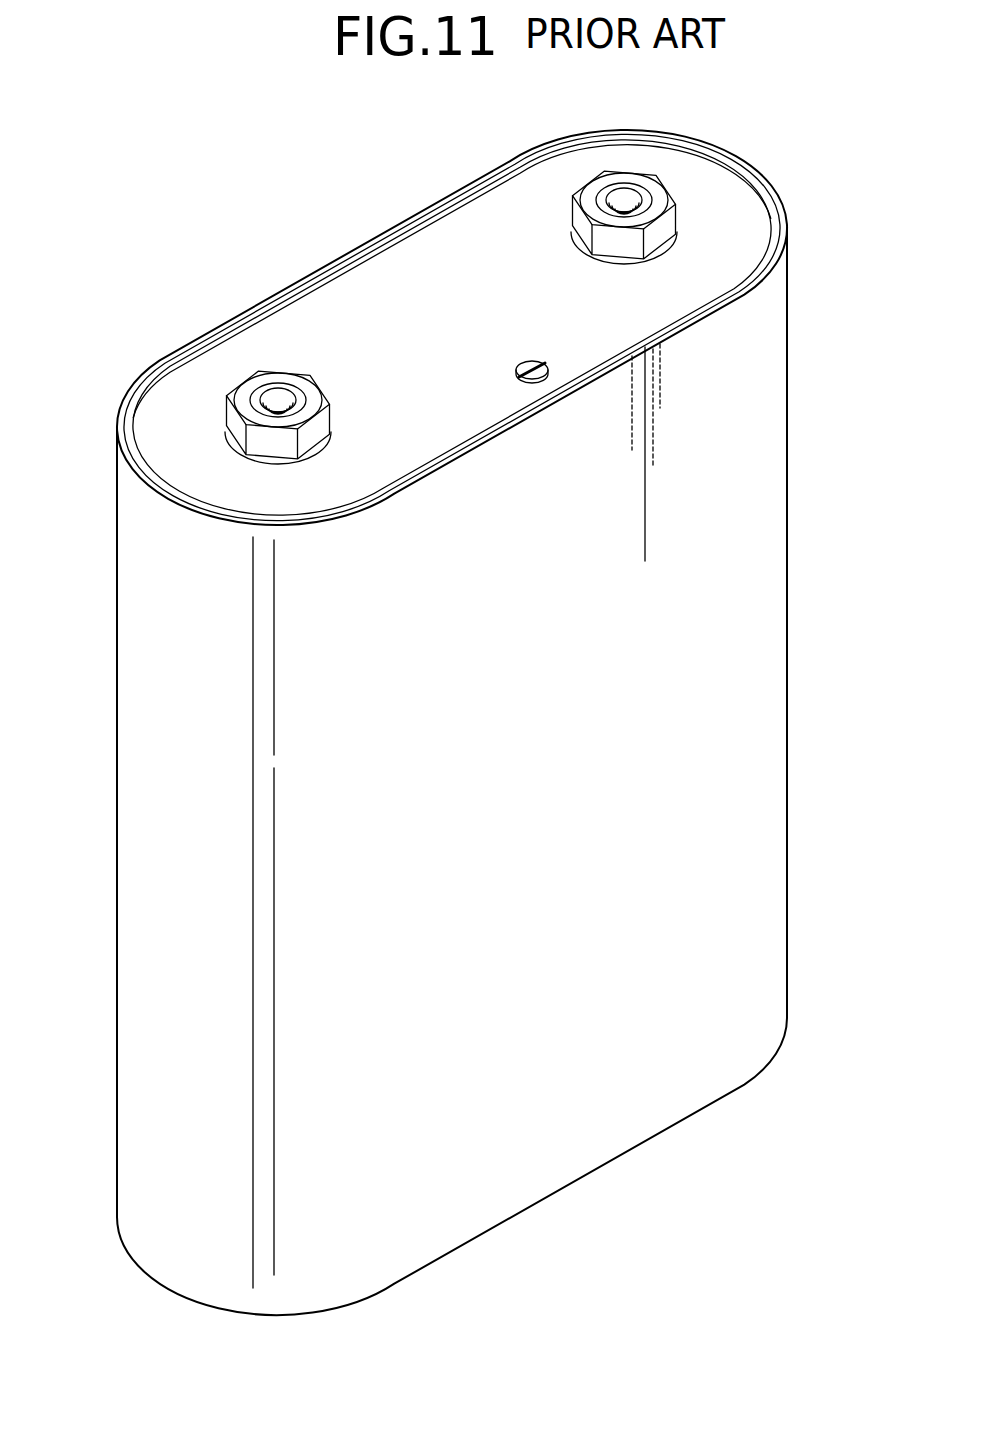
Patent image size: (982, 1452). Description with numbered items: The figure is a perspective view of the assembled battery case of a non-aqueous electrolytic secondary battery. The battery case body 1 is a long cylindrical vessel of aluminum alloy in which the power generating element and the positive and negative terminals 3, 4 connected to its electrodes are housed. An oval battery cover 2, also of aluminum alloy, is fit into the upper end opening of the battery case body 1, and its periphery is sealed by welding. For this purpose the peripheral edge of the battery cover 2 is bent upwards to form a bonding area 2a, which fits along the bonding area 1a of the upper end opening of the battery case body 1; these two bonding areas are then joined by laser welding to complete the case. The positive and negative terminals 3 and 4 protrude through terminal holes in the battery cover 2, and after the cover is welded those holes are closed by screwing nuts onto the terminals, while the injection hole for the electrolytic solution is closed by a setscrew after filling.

The battery case body 1 is at (774, 585).
The bonding area of the battery case body 1a is at (770, 188).
The oval battery cover 2 is at (415, 252).
The bonding area of the battery cover 2a is at (721, 159).
The positive terminal 3 is at (650, 197).
The negative terminal 4 is at (297, 400).